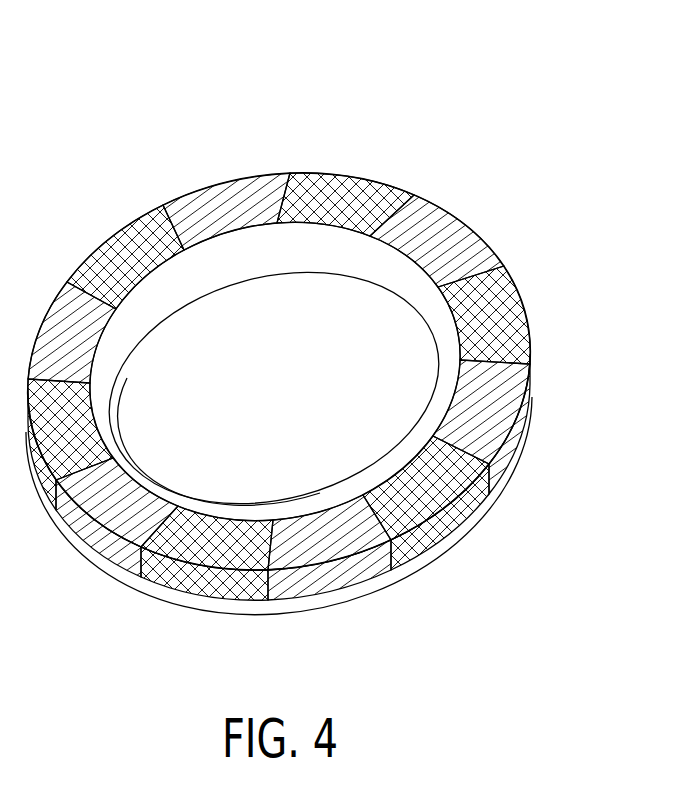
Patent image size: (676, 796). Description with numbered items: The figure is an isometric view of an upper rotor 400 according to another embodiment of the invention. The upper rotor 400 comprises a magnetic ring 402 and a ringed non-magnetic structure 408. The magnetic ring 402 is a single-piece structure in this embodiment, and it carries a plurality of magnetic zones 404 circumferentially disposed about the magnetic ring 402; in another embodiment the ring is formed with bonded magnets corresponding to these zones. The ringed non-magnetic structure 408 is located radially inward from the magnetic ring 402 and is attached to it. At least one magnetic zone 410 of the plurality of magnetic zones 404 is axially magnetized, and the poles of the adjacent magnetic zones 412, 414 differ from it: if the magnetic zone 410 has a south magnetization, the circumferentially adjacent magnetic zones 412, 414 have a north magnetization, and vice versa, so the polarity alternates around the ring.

The upper rotor 400 is at (338, 339).
The magnetic ring 402 is at (310, 187).
The plurality of magnetic zones 404 is at (427, 160).
The ringed non-magnetic structure 408 is at (303, 272).
The magnetic zone 410 is at (450, 510).
The adjacent magnetic zone 412 is at (507, 443).
The adjacent magnetic zone 414 is at (340, 582).